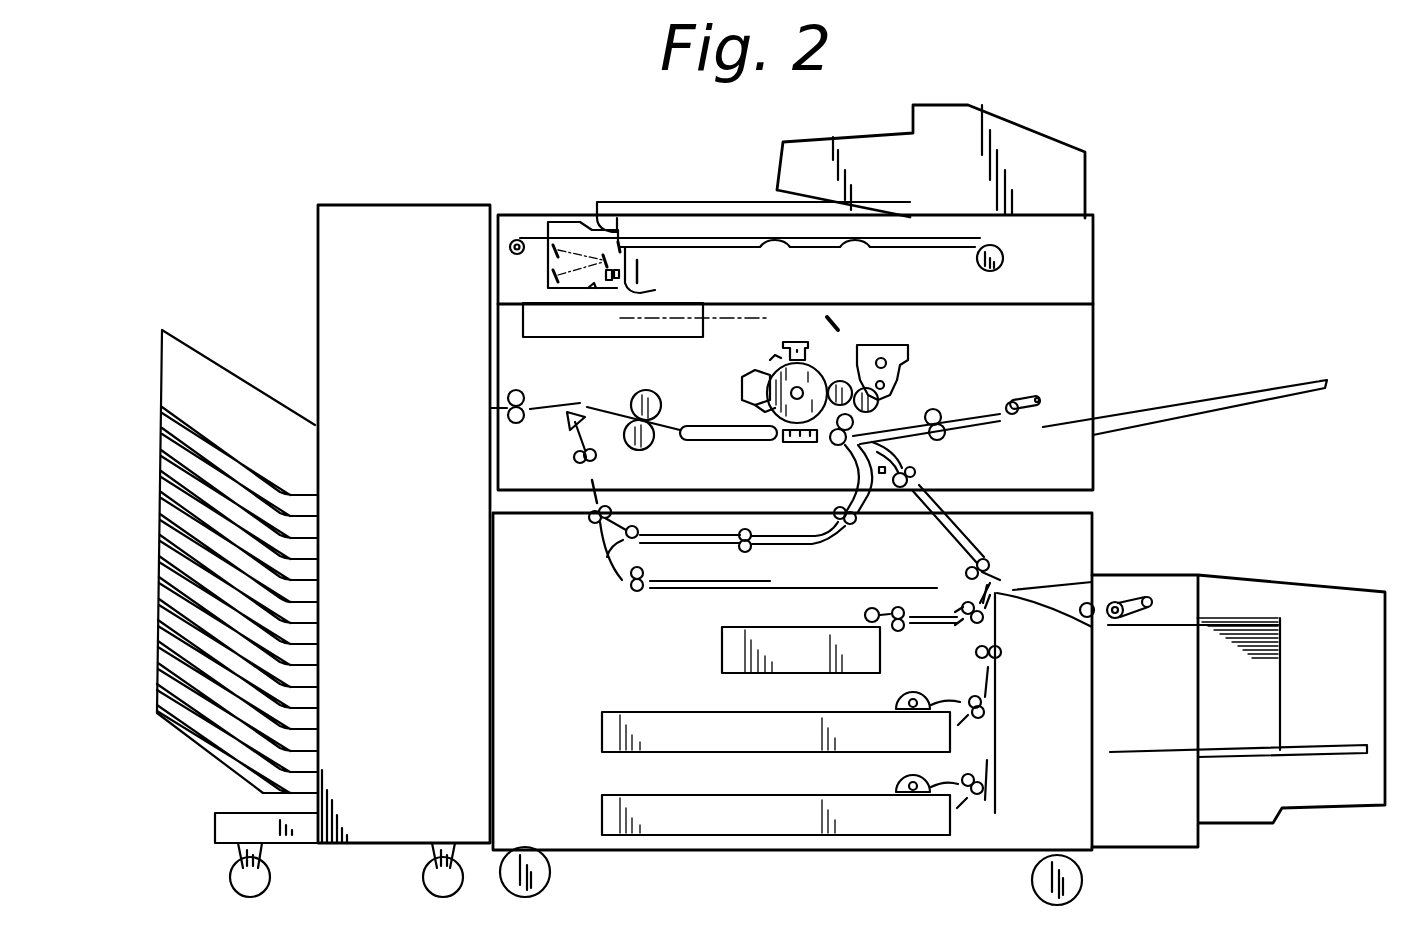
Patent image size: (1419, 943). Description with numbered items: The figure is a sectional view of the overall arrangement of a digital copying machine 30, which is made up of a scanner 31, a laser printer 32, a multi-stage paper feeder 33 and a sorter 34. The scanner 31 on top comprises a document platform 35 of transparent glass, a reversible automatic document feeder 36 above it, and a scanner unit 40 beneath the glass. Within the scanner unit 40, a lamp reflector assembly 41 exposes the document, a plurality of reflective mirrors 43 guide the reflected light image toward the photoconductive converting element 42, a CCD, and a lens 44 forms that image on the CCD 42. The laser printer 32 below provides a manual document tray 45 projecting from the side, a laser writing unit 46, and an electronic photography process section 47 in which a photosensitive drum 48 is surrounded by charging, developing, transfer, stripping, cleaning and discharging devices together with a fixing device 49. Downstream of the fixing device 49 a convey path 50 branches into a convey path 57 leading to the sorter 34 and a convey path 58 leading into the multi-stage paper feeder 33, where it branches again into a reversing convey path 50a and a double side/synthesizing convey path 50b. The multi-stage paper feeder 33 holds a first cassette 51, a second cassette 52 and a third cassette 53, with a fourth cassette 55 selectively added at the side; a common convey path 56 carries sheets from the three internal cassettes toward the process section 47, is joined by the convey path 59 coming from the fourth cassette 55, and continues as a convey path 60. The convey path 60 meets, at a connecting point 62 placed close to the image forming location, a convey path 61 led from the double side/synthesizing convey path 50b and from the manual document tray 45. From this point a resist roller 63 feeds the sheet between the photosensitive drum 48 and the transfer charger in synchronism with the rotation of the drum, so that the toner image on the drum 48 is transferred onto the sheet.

The digital copying machine 30 is at (1203, 248).
The scanner 31 is at (1097, 152).
The laser printer 32 is at (1097, 490).
The multi-stage paper feeder 33 is at (478, 510).
The sorter 34 is at (420, 205).
The document platform 35 is at (728, 202).
The reversible automatic document feeder 36 is at (1058, 135).
The scanner unit 40 is at (528, 263).
The lamp reflector assembly 41 is at (616, 228).
The photoconductive converting element 42 is at (645, 265).
The reflective mirrors 43 is at (538, 273).
The lens 44 is at (655, 290).
The manual document tray 45 is at (1270, 388).
The laser writing unit 46 is at (710, 315).
The electronic photography process section 47 is at (953, 368).
The photosensitive drum 48 is at (820, 358).
The fixing device 49 is at (650, 390).
The convey path 50 is at (614, 407).
The reversing convey path 50a is at (690, 588).
The double side/synthesizing convey path 50b is at (805, 545).
The first cassette 51 is at (723, 657).
The second cassette 52 is at (602, 722).
The third cassette 53 is at (602, 812).
The fourth cassette 55 is at (1160, 573).
The common convey path 56 is at (997, 718).
The convey path 57 is at (556, 392).
The convey path 58 is at (575, 450).
The convey path 59 is at (1060, 585).
The convey path 60 is at (963, 543).
The convey path 61 is at (982, 433).
The connecting point 62 is at (840, 455).
The resist roller 63 is at (907, 414).